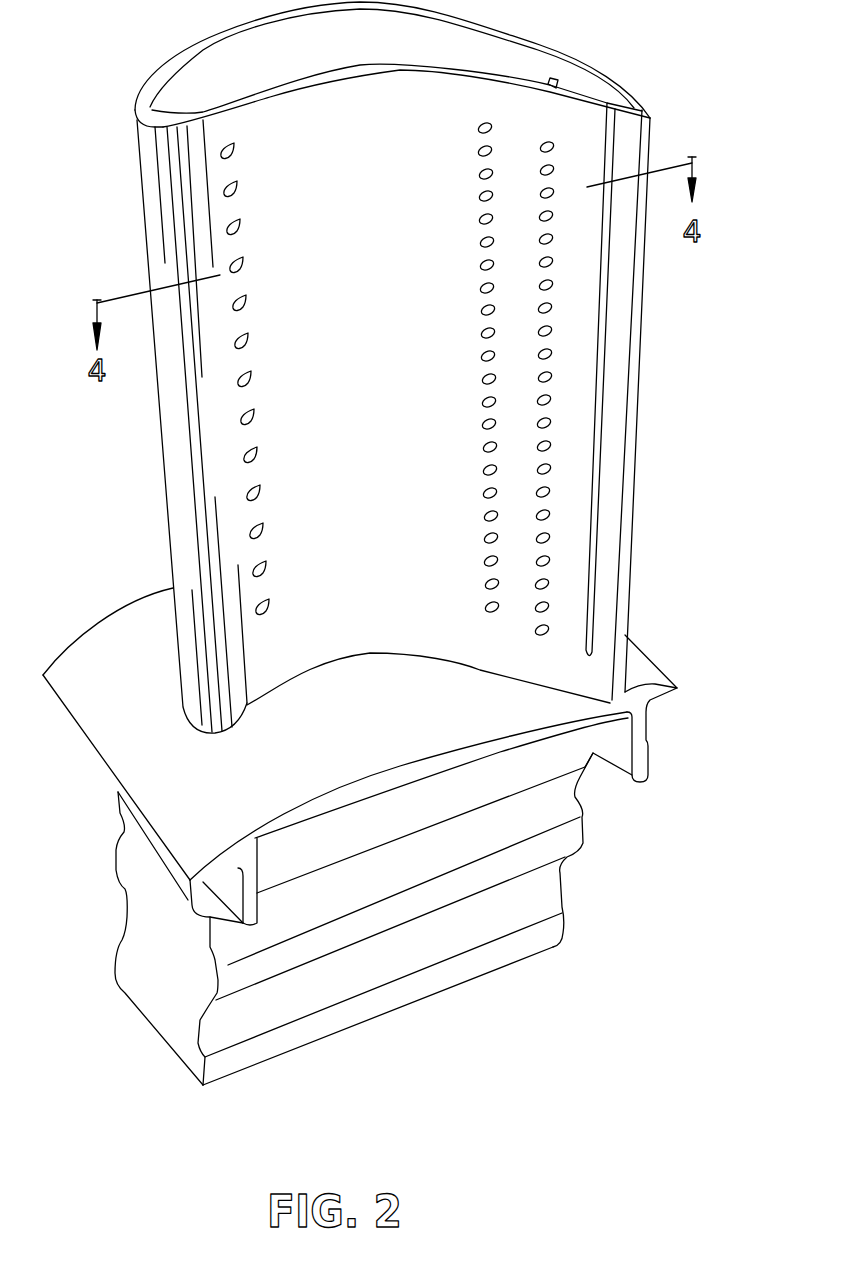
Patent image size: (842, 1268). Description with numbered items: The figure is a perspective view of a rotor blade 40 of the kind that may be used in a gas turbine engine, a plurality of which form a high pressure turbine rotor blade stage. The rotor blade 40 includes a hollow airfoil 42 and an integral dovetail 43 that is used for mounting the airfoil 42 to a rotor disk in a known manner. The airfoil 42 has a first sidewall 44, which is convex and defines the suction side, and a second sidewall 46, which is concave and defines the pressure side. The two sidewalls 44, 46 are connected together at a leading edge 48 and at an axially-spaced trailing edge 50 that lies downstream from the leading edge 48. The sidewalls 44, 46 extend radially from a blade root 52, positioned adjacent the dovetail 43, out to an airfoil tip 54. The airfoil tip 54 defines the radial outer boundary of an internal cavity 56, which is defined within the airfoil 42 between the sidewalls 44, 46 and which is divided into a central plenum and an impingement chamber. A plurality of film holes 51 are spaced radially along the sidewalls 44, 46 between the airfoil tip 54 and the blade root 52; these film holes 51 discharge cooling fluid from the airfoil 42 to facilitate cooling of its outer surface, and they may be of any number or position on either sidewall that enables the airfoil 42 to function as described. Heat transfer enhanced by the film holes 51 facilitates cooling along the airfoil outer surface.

The rotor blade 40 is at (660, 322).
The hollow airfoil 42 is at (157, 409).
The integral dovetail 43 is at (157, 903).
The first sidewall 44 is at (637, 408).
The second sidewall 46 is at (342, 195).
The leading edge 48 is at (128, 128).
The trailing edge 50 is at (652, 130).
The film holes 51 is at (490, 127).
The blade root 52 is at (190, 714).
The airfoil tip 54 is at (242, 52).
The internal cavity 56 is at (452, 50).